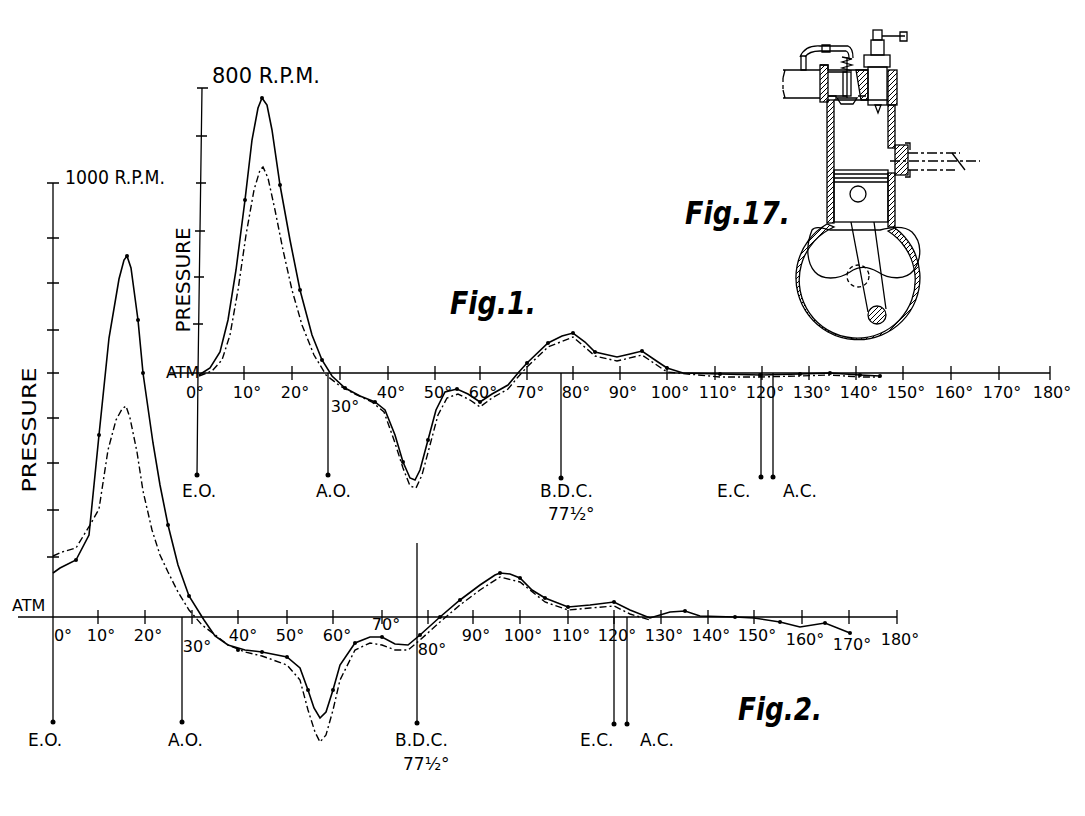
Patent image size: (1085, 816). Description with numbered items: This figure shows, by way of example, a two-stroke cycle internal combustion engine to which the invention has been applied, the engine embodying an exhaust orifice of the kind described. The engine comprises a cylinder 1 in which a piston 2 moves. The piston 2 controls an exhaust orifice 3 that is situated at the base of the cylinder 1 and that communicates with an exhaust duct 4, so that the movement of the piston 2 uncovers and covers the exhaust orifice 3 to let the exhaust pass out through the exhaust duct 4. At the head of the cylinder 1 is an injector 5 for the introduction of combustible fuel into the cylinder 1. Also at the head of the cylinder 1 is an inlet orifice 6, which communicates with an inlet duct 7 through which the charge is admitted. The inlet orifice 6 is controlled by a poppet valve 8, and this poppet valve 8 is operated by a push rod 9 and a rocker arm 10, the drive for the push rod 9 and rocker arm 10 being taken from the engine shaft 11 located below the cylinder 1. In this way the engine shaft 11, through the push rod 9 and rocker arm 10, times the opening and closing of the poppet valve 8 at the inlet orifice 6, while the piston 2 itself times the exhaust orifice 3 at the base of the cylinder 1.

The cylinder 1 is at (827, 163).
The piston 2 is at (834, 222).
The exhaust orifice 3 is at (893, 172).
The exhaust duct 4 is at (900, 160).
The injector 5 is at (879, 79).
The inlet orifice 6 is at (841, 100).
The inlet duct 7 is at (799, 95).
The poppet valve 8 is at (851, 100).
The push rod 9 is at (801, 62).
The rocker arm 10 is at (817, 50).
The engine shaft 11 is at (856, 278).